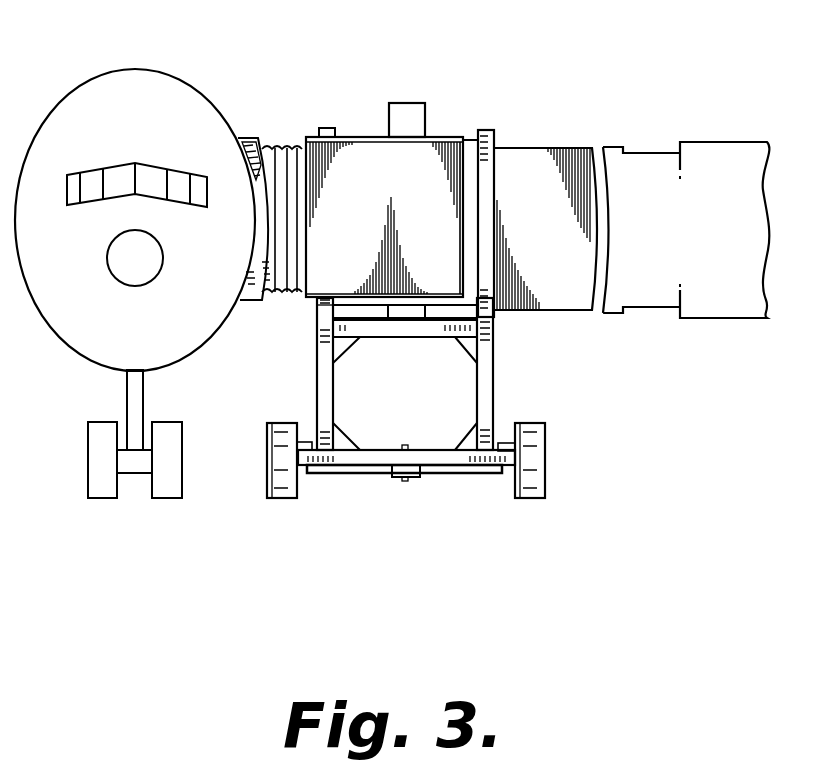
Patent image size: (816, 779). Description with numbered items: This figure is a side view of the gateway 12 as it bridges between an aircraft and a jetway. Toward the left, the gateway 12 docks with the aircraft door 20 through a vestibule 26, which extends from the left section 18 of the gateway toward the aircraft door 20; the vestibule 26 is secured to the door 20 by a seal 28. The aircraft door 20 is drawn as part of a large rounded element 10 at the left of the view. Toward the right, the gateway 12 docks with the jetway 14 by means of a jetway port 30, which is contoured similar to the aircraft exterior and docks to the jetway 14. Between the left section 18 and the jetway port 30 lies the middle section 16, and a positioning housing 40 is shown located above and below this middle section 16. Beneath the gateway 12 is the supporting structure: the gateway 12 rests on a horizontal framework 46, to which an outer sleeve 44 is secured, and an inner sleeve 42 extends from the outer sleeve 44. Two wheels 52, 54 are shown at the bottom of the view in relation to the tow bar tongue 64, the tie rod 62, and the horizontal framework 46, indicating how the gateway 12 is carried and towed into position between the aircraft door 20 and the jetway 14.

The viewing screen / head display 10 is at (72, 92).
The gateway 12 is at (548, 128).
The jetway 14 is at (720, 142).
The middle section 16 is at (364, 137).
The left section 18 is at (305, 298).
The aircraft door 20 is at (240, 138).
The vestibule 26 is at (278, 147).
The seal 28 is at (257, 138).
The jetway port 30 is at (596, 148).
The positioning housing 40 is at (424, 103).
The inner sleeve 42 is at (492, 130).
The outer sleeve 44 is at (317, 362).
The horizontal framework 46 is at (412, 320).
The wheel 52 is at (280, 498).
The wheel 54 is at (545, 498).
The tie rod 62 is at (347, 465).
The tow bar tongue 64 is at (420, 478).